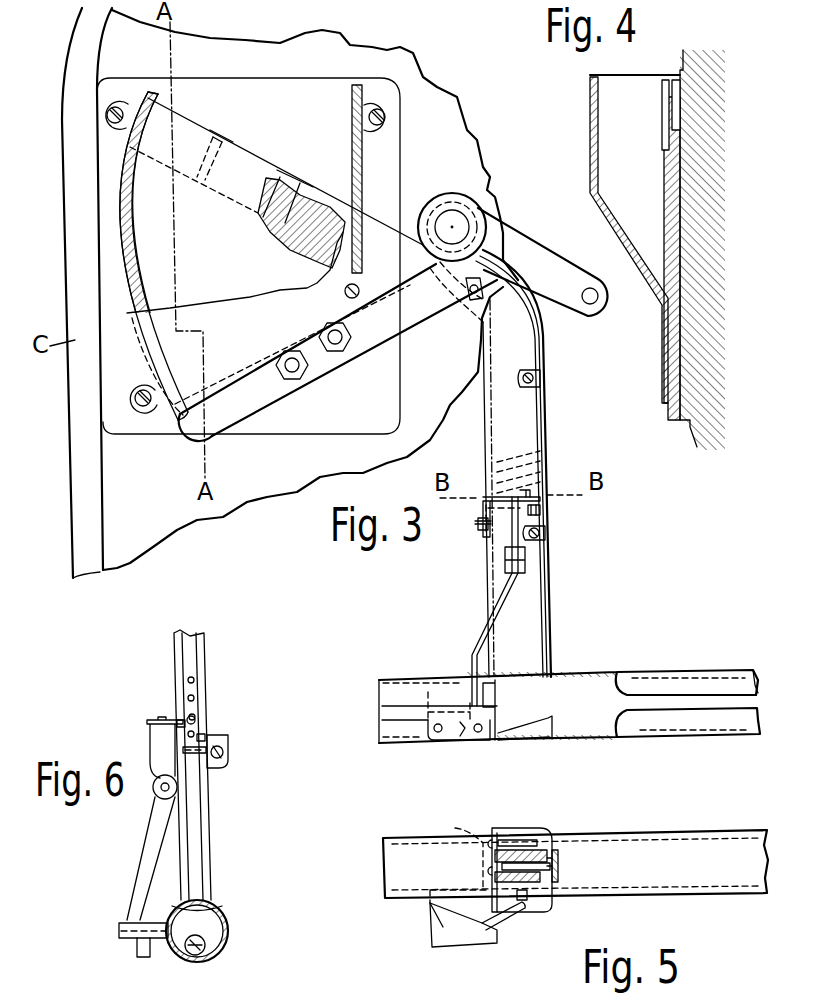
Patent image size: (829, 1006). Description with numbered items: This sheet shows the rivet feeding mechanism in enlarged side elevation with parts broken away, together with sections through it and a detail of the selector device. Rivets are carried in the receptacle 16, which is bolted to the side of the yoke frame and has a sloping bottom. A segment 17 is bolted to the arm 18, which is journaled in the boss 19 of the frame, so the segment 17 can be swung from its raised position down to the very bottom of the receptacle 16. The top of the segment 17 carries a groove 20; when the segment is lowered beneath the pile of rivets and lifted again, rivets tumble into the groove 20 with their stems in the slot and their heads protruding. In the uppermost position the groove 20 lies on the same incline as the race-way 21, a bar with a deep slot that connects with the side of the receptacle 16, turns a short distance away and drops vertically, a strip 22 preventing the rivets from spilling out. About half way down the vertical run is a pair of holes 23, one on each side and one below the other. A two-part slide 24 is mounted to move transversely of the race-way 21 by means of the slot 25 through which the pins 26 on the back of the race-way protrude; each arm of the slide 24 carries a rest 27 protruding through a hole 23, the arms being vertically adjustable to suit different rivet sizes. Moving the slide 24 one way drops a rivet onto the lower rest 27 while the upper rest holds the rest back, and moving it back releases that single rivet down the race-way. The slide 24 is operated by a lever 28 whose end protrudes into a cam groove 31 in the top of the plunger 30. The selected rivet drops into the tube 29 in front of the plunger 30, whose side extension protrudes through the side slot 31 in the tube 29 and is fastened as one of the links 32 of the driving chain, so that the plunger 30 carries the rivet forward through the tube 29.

In FIG. 3, the receptacle 16 is at (115, 228).
In FIG. 4, the receptacle 16 is at (590, 113).
In FIG. 3, the segment 17 is at (275, 205).
In FIG. 4, the segment 17 is at (666, 193).
In FIG. 3, the arm 18 is at (397, 320).
In FIG. 3, the boss 19 is at (470, 203).
In FIG. 3, the groove 20 is at (280, 185).
In FIG. 4, the groove 20 is at (668, 115).
In FIG. 3, the race-way 21 is at (382, 233).
In FIG. 6, the race-way 21 is at (188, 640).
In FIG. 5, the race-way 21 is at (515, 855).
In FIG. 3, the strip 22 is at (548, 353).
In FIG. 5, the strip 22 is at (560, 862).
In FIG. 3, the holes 23 is at (545, 484).
In FIG. 6, the holes 23 is at (184, 716).
In FIG. 5, the holes 23 is at (553, 838).
In FIG. 3, the two-part slide 24 is at (495, 496).
In FIG. 6, the two-part slide 24 is at (147, 722).
In FIG. 5, the two-part slide 24 is at (533, 905).
In FIG. 6, the slot 25 is at (205, 770).
In FIG. 3, the pins 26 is at (478, 526).
In FIG. 5, the pins 26 is at (488, 870).
In FIG. 3, the rest 27 is at (543, 508).
In FIG. 6, the rest 27 is at (200, 718).
In FIG. 5, the rest 27 is at (548, 890).
In FIG. 3, the lever 28 is at (480, 638).
In FIG. 6, the lever 28 is at (143, 845).
In FIG. 5, the lever 28 is at (507, 918).
In FIG. 3, the tube 29 is at (598, 677).
In FIG. 6, the tube 29 is at (228, 936).
In FIG. 5, the tube 29 is at (698, 835).
In FIG. 3, the plunger 30 is at (497, 695).
In FIG. 6, the plunger 30 is at (205, 920).
In FIG. 5, the plunger 30 is at (473, 837).
In FIG. 3, the side slot 31 is at (440, 712).
In FIG. 6, the side slot 31 is at (150, 920).
In FIG. 5, the side slot 31 is at (432, 938).
In FIG. 3, the link 32 is at (448, 736).
In FIG. 6, the link 32 is at (140, 950).